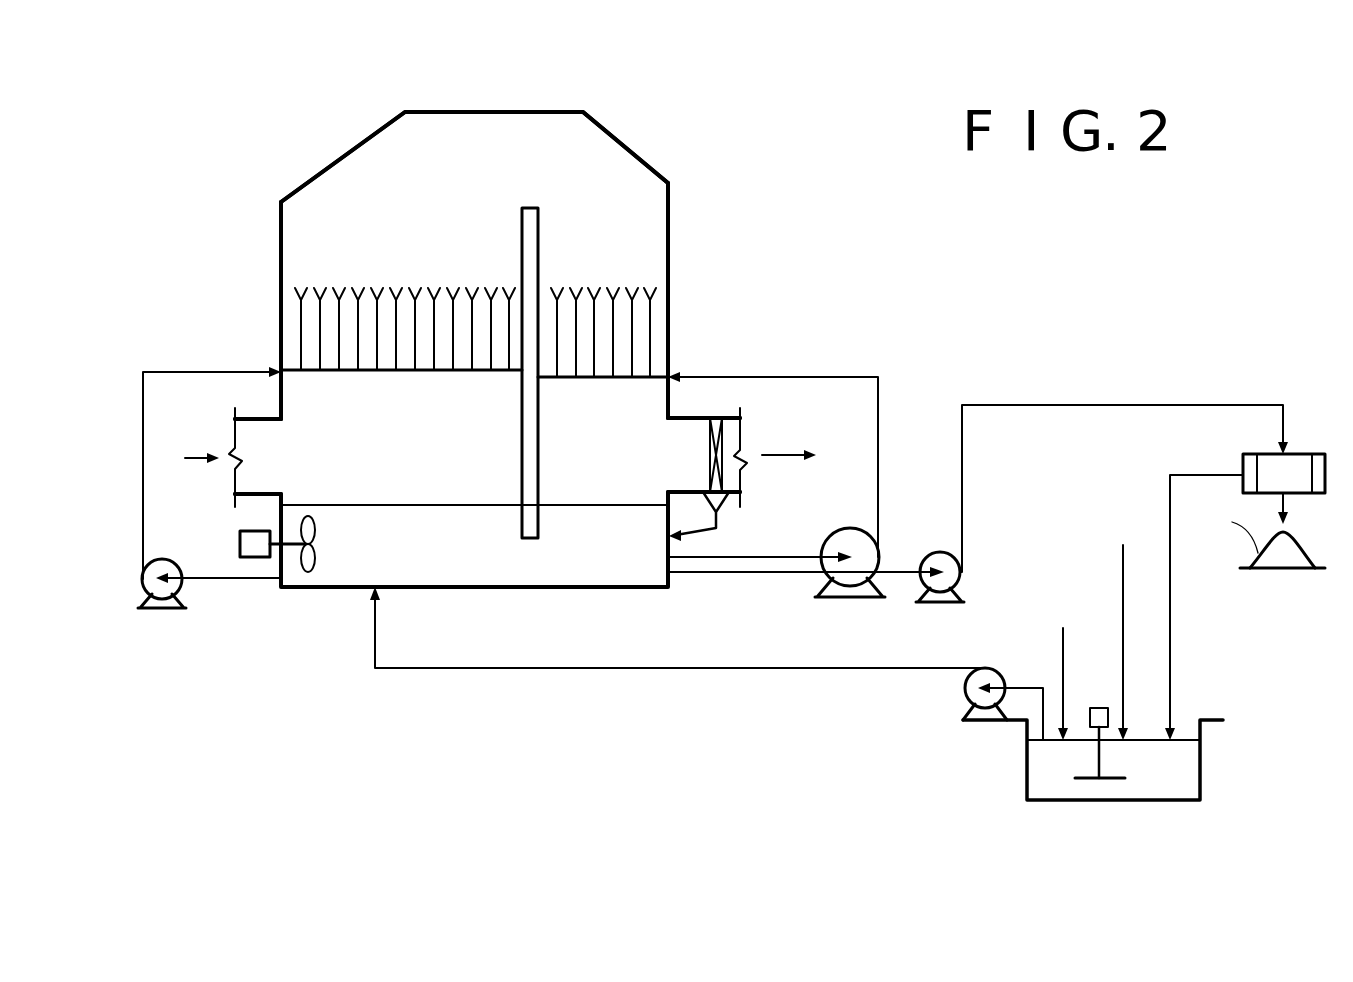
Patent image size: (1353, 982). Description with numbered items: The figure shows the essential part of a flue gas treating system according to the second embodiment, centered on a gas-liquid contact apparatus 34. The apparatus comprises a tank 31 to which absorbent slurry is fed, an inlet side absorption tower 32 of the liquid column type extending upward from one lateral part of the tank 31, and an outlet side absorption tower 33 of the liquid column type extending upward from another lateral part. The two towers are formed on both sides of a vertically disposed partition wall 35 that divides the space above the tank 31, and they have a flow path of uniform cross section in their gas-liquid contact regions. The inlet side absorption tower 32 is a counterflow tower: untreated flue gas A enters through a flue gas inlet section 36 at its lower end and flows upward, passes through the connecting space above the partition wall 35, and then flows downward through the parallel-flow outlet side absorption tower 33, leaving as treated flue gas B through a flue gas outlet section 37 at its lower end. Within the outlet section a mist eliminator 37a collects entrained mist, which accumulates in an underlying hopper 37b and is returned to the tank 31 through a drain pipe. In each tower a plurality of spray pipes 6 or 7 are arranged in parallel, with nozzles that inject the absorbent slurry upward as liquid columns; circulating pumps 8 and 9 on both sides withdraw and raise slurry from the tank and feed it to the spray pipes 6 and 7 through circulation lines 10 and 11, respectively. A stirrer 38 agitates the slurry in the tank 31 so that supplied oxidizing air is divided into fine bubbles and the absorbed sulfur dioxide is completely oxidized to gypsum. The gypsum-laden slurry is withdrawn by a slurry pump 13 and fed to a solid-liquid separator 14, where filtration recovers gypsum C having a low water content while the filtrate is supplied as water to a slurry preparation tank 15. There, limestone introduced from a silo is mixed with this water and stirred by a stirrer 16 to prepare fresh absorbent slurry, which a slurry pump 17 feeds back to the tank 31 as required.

The spray pipes 6 is at (620, 380).
The spray pipes 7 is at (422, 372).
The circulating pump 8 is at (846, 528).
The circulating pump 9 is at (170, 559).
The circulation line 10 is at (860, 377).
The circulation line 11 is at (172, 371).
The slurry pump 13 is at (936, 552).
The solid-liquid separator 14 is at (1262, 453).
The slurry preparation tank 15 is at (1200, 765).
The stirrer 16 is at (1088, 780).
The slurry pump 17 is at (965, 690).
The tank 31 is at (310, 590).
The inlet side absorption tower 32 is at (280, 232).
The outlet side absorption tower 33 is at (668, 232).
The gas-liquid contact apparatus 34 is at (322, 164).
The partition wall 35 is at (529, 207).
The flue gas inlet section 36 is at (262, 418).
The flue gas outlet section 37 is at (690, 418).
The mist eliminator 37a is at (725, 433).
The hopper 37b is at (720, 513).
The stirrer 38 is at (318, 552).
The untreated flue gas A is at (184, 459).
The treated flue gas B is at (789, 440).
The gypsum C is at (1267, 536).